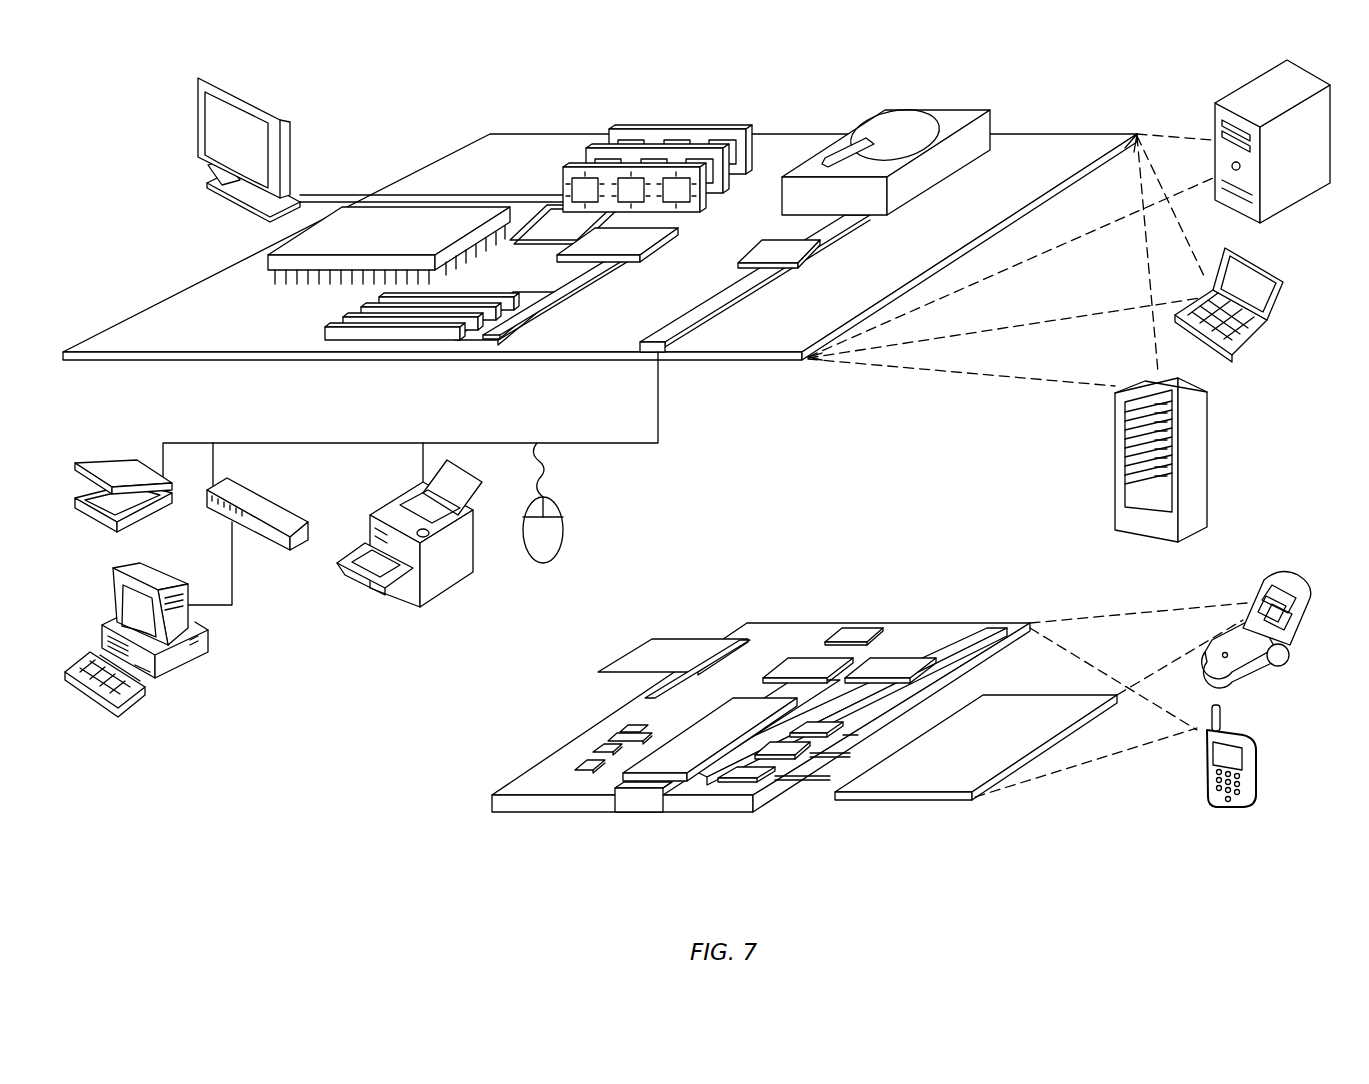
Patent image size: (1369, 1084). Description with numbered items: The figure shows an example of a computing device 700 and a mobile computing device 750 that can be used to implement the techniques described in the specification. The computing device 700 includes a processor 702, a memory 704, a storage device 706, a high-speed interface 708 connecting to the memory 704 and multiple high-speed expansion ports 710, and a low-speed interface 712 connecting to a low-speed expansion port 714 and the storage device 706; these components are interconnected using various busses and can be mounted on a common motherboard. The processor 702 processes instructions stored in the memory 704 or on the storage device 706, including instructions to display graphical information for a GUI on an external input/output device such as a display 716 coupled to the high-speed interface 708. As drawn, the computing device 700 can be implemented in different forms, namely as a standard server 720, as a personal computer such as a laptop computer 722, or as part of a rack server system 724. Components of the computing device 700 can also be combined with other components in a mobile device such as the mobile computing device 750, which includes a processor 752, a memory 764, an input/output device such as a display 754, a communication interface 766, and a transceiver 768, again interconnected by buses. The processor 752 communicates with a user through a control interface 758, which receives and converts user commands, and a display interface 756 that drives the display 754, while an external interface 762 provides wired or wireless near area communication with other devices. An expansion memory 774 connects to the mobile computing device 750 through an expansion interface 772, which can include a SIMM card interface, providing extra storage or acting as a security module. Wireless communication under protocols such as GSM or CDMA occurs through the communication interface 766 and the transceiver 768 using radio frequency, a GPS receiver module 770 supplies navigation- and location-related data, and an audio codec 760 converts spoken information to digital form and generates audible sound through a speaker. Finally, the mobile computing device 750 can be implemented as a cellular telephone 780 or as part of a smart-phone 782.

The computing device 700 is at (410, 105).
The processor 702 is at (268, 260).
The memory 704 is at (628, 129).
The storage device 706 is at (873, 115).
The high-speed interface 708 is at (552, 242).
The high-speed expansion ports 710 is at (329, 335).
The low-speed interface 712 is at (775, 242).
The low-speed expansion port 714 is at (665, 355).
The display 716 is at (197, 74).
The standard server 720 is at (1215, 121).
The laptop computer 722 is at (1285, 281).
The rack server system 724 is at (1115, 488).
The mobile computing device 750 is at (465, 806).
The processor 752 is at (682, 781).
The display 754 is at (937, 782).
The display interface 756 is at (800, 782).
The control interface 758 is at (813, 759).
The audio codec 760 is at (830, 737).
The external interface 762 is at (645, 812).
The memory 764 is at (592, 754).
The communication interface 766 is at (812, 665).
The transceiver 768 is at (883, 656).
The GPS receiver module 770 is at (863, 627).
The expansion interface 772 is at (728, 638).
The expansion memory 774 is at (652, 639).
The cellular telephone 780 is at (1268, 580).
The smart-phone 782 is at (1202, 768).